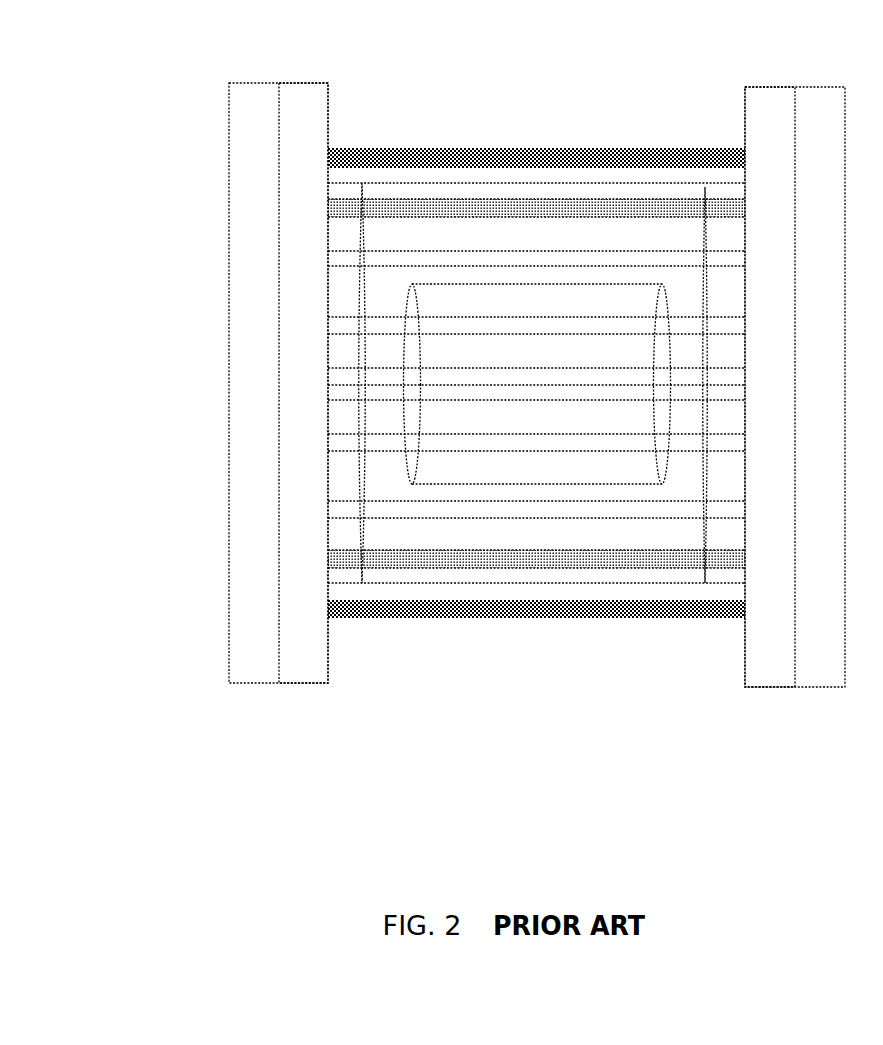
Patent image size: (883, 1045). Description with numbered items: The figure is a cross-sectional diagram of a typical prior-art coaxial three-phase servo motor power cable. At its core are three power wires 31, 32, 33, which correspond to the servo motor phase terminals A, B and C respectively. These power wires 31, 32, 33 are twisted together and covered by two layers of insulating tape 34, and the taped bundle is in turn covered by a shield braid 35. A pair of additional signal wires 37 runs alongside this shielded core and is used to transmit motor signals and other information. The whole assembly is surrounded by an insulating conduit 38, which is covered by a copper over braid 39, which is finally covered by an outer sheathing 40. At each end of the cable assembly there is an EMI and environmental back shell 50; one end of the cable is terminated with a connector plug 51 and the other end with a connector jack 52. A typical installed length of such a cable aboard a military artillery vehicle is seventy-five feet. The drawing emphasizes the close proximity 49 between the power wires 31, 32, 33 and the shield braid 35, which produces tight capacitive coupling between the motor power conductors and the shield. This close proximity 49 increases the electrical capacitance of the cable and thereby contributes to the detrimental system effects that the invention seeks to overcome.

The power wire 31 is at (543, 405).
The power wire 32 is at (573, 388).
The power wire 33 is at (597, 370).
The insulating tape 34 is at (585, 334).
The shield braid 35 is at (500, 284).
The signal wires 37 is at (627, 250).
The insulating conduit 38 is at (675, 212).
The copper over braid 39 is at (475, 183).
The outer sheathing 40 is at (405, 157).
The close proximity 49 is at (537, 384).
The EMI and environmental back shell 50 is at (303, 670).
The connector plug 51 is at (250, 667).
The connector jack 52 is at (823, 672).